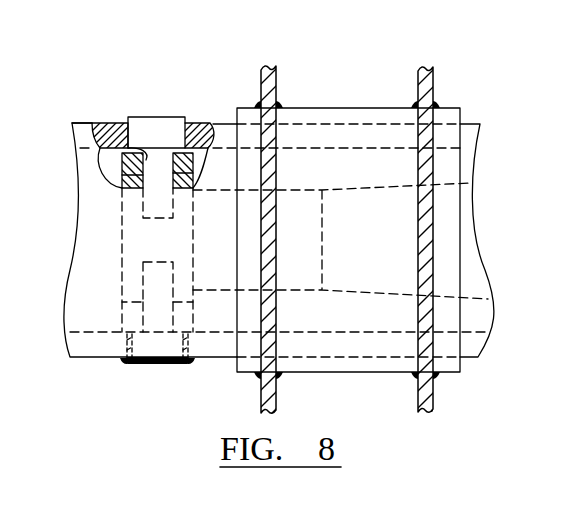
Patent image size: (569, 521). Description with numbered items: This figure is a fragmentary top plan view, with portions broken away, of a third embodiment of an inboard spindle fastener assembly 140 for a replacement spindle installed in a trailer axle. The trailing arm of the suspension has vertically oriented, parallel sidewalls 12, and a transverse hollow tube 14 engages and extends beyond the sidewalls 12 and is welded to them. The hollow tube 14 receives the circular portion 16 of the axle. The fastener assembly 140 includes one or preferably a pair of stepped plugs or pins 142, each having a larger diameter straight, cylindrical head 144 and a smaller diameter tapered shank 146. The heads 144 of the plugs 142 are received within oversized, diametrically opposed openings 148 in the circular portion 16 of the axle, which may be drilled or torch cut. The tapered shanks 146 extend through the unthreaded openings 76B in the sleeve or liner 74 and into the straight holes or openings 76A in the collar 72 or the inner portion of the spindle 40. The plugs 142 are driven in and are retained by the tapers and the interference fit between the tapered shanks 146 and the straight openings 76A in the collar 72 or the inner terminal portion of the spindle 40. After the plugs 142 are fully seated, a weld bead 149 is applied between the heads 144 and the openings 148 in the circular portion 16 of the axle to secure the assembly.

The parallel sidewalls 12 is at (418, 384).
The transverse hollow tube 14 is at (367, 113).
The circular portion 16 is at (472, 348).
The spindle 40 is at (477, 280).
The collar 72 is at (122, 188).
The sleeve or liner 74 is at (122, 169).
The straight holes or openings 76A is at (143, 219).
The unthreaded openings 76B is at (97, 140).
The inboard spindle fastener assembly 140 is at (488, 62).
The stepped plugs or pins 142 is at (155, 364).
The head 144 is at (156, 127).
The tapered shank 146 is at (199, 123).
The oversized openings 148 is at (120, 124).
The weld 149 is at (125, 360).